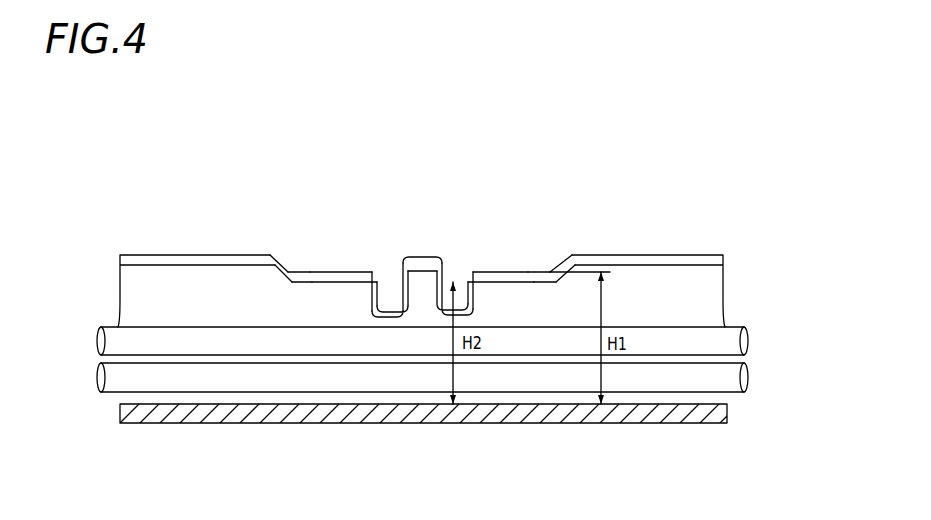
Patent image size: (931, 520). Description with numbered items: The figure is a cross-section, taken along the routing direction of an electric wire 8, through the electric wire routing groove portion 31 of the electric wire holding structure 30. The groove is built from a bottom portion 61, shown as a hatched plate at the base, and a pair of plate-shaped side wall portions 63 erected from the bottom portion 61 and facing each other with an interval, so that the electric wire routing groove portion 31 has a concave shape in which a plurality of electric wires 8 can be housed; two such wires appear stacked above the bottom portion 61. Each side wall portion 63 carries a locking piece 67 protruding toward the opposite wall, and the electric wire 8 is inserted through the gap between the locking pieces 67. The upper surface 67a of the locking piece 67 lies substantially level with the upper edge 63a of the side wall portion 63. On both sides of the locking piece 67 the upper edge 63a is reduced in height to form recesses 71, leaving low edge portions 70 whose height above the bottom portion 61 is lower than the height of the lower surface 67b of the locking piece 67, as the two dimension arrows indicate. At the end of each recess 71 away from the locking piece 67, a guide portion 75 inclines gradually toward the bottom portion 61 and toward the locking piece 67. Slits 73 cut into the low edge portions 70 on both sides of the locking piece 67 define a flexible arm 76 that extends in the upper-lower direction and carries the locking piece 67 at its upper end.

The electric wire holding structure 30 is at (488, 178).
The upper edge of side wall portion 63a is at (203, 255).
The side wall portion 63 is at (678, 268).
The guide portion 75 is at (282, 257).
The recess 71 is at (306, 272).
The low edge portion 70 is at (345, 272).
The slit 73 is at (393, 272).
The locking piece 67 is at (448, 280).
The upper surface of locking piece 67a is at (423, 257).
The lower surface of locking piece 67b is at (412, 290).
The flexible arm 76 is at (385, 300).
The electric wire routing groove portion 31 is at (633, 300).
The electric wire 8 is at (704, 327).
The bottom portion 61 is at (655, 424).